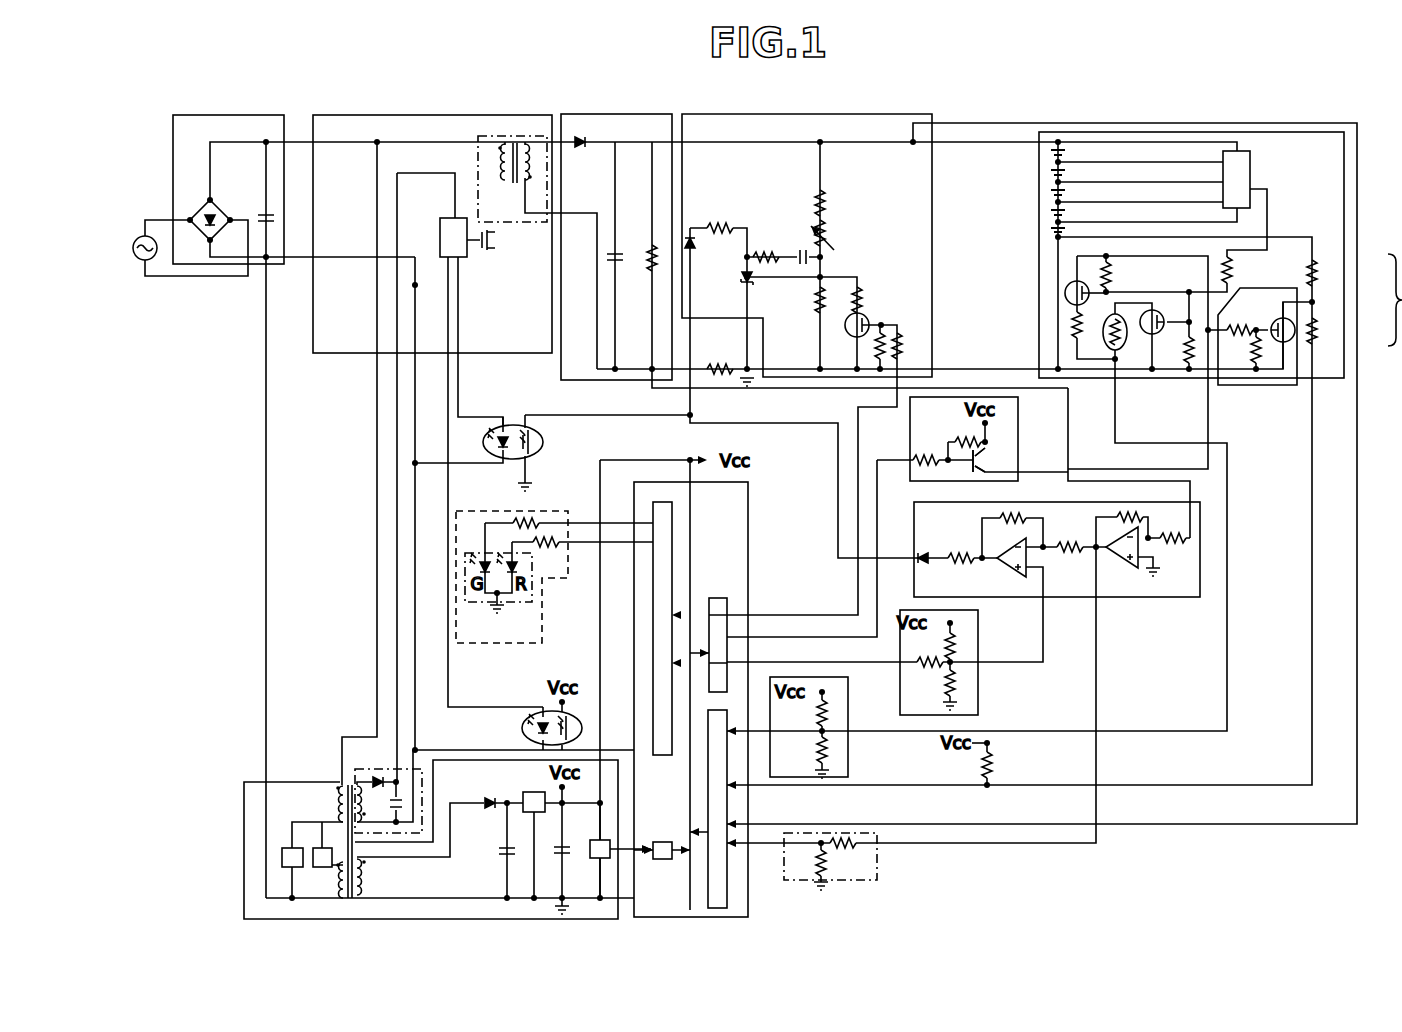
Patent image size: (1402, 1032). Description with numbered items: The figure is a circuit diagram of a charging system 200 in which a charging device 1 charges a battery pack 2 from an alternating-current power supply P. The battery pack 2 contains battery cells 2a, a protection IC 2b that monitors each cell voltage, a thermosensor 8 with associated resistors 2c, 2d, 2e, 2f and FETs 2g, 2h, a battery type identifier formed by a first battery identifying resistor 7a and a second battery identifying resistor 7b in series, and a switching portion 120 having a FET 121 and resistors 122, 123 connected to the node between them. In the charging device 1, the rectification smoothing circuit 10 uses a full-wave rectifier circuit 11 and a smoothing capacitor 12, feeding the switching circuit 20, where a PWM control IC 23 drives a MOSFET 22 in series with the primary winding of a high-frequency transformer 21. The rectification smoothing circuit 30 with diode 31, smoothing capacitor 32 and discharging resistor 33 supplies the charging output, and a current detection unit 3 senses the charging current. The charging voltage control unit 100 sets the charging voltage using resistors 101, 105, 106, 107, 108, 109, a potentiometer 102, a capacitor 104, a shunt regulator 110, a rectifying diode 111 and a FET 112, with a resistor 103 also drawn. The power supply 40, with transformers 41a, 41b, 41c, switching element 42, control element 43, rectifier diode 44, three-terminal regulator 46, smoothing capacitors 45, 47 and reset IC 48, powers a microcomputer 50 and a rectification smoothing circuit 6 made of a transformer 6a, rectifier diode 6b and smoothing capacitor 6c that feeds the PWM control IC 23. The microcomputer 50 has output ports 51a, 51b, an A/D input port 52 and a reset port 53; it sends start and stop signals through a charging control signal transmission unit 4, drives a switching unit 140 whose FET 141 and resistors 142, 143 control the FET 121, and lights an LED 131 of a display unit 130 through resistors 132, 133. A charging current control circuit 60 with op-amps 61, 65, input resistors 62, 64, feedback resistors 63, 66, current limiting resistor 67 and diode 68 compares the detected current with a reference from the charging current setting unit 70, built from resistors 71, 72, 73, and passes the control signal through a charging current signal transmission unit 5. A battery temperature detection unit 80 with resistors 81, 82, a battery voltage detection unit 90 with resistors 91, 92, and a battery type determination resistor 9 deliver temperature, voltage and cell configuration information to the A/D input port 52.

The charging device 1 is at (236, 96).
The alternating-current power supply P is at (142, 236).
The rectification smoothing circuit 10 is at (189, 115).
The full-wave rectifier circuit 11 is at (201, 212).
The smoothing capacitor 12 is at (262, 211).
The switching circuit 20 is at (338, 115).
The high-frequency transformer 21 is at (487, 135).
The MOSFET 22 is at (486, 252).
The PWM control IC 23 is at (445, 218).
The rectification smoothing circuit 30 is at (578, 114).
The diode 31 is at (581, 149).
The smoothing capacitor 32 is at (618, 251).
The discharging resistor 33 is at (648, 262).
The charging system 200 is at (606, 95).
The charging voltage control unit 100 is at (850, 113).
The resistor 101 is at (828, 206).
The potentiometer 102 is at (832, 239).
The resistor 103 is at (761, 251).
The capacitor 104 is at (802, 249).
The resistor 105 is at (813, 305).
The resistor 106 is at (865, 291).
The resistor 107 is at (877, 348).
The resistor 108 is at (905, 346).
The resistor 109 is at (718, 225).
The shunt regulator 110 is at (755, 281).
The rectifying diode 111 is at (693, 251).
The FET 112 is at (873, 318).
The current detection unit 3 is at (720, 366).
The battery pack 2 is at (1039, 184).
The battery cells 2a is at (1070, 170).
The protection IC 2b is at (1252, 170).
The resistor 2c is at (1233, 281).
The resistor 2d is at (1110, 281).
The resistor 2e is at (1185, 348).
The resistor 2f is at (1068, 325).
The FET 2g is at (1066, 287).
The FET 2h is at (1160, 308).
The thermosensor 8 is at (1103, 333).
The switching portion 120 is at (1280, 288).
The FET 121 is at (1268, 313).
The resistor 122 is at (1240, 350).
The resistor 123 is at (1258, 350).
The first battery identifying resistor 7a is at (1318, 332).
The second battery identifying resistor 7b is at (1318, 273).
The switching unit 140 is at (1020, 410).
The FET 141 is at (990, 463).
The resistor 142 is at (925, 455).
The resistor 143 is at (963, 437).
The charging current signal transmission unit 5 is at (548, 441).
The display unit 130 is at (478, 510).
The LED 131 is at (465, 558).
The resistor 132 is at (548, 548).
The resistor 133 is at (533, 520).
The microcomputer 50 is at (748, 503).
The output port 51a is at (672, 549).
The output port 51b is at (714, 598).
The A/D input port 52 is at (708, 880).
The reset port 53 is at (661, 842).
The charging current control circuit 60 is at (1175, 598).
The operational amplifier 61 is at (1128, 562).
The input resistor 62 is at (1168, 548).
The feedback resistor 63 is at (1145, 516).
The input resistor 64 is at (1068, 540).
The operational amplifier 65 is at (1010, 571).
The feedback resistor 66 is at (1015, 512).
The current limiting resistor 67 is at (960, 551).
The diode 68 is at (920, 549).
The charging current setting unit 70 is at (980, 622).
The resistor 71 is at (955, 645).
The resistor 72 is at (958, 684).
The resistor 73 is at (932, 672).
The battery temperature detection unit 80 is at (848, 690).
The resistor 81 is at (830, 716).
The resistor 82 is at (835, 750).
The battery type determination resistor 9 is at (996, 766).
The battery voltage detection unit 90 is at (878, 859).
The resistor 91 is at (850, 848).
The resistor 92 is at (815, 862).
The charging control signal transmission unit 4 is at (523, 727).
The rectification smoothing circuit 6 is at (358, 769).
The transformer 6a is at (375, 804).
The rectifier diode 6b is at (377, 779).
The smoothing capacitor 6c is at (405, 803).
The power supply 40 is at (256, 782).
The transformer 41a is at (338, 798).
The transformer 41b is at (340, 880).
The transformer 41c is at (368, 884).
The switching element 42 is at (289, 847).
The control element 43 is at (322, 847).
The rectifier diode 44 is at (488, 812).
The smoothing capacitor 45 is at (500, 856).
The three-terminal regulator 46 is at (533, 792).
The smoothing capacitor 47 is at (568, 858).
The reset IC 48 is at (590, 840).